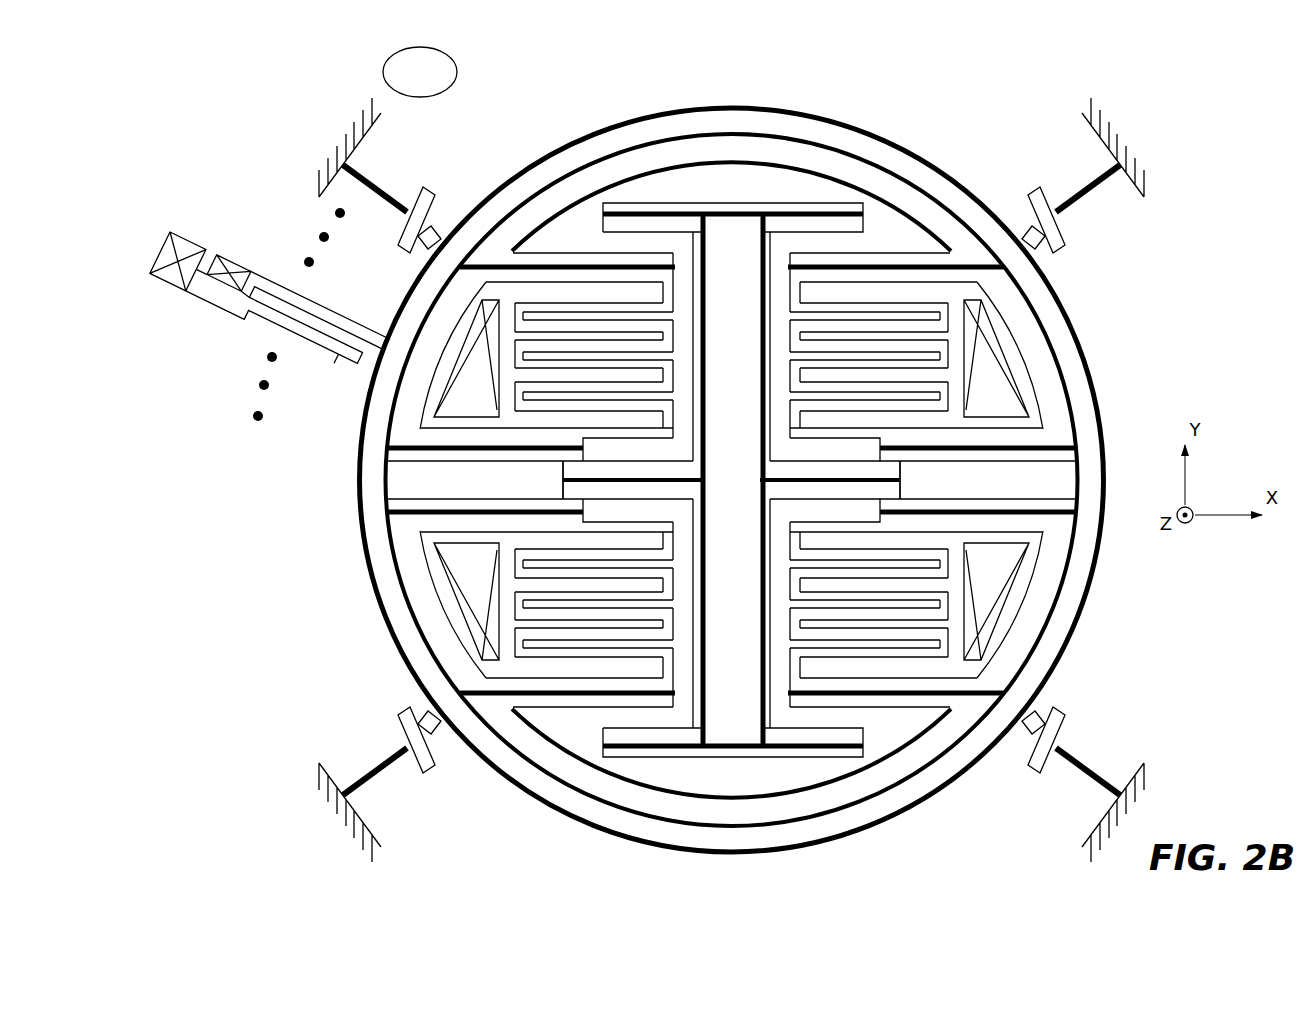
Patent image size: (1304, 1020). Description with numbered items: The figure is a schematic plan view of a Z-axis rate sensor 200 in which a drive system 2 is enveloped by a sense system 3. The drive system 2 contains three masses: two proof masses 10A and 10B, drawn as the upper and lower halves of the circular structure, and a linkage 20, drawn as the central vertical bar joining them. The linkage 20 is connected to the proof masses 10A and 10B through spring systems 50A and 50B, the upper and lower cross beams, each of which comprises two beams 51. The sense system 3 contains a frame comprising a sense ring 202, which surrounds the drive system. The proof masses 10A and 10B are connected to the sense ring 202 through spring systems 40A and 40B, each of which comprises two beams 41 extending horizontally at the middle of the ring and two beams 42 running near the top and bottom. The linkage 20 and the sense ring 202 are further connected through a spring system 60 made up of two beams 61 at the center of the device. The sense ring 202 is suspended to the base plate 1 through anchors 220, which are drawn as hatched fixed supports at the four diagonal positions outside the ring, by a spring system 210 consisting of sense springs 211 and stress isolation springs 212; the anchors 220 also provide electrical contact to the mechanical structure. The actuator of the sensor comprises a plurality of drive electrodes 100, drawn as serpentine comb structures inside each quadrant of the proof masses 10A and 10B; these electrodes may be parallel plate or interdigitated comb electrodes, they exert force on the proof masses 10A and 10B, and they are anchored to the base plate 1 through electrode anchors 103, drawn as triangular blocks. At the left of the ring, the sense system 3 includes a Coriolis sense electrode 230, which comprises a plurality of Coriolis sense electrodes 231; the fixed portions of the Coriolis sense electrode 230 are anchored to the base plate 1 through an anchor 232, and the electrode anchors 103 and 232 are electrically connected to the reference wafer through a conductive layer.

The base plate 1 is at (420, 72).
The drive system 2 is at (744, 486).
The sense system 3 is at (371, 626).
The linkage 20 is at (730, 268).
The Z-axis rate sensor 200 is at (747, 460).
The sense ring 202 is at (1063, 662).
The spring system 50A is at (787, 209).
The spring system 50B is at (781, 750).
The beam 51 is at (813, 207).
The proof mass 10A is at (989, 307).
The proof mass 10B is at (986, 656).
The spring system 40A is at (918, 273).
The spring system 40B is at (912, 688).
The beam 41 is at (1010, 455).
The beam 42 is at (962, 263).
The spring system 60 is at (797, 485).
The beam 61 is at (660, 474).
The drive electrode 100 is at (880, 373).
The electrode anchor 103 is at (996, 578).
The spring system 210 is at (388, 526).
The sense spring 211 is at (386, 774).
The stress isolation spring 212 is at (438, 772).
The anchor 220 is at (319, 800).
The Coriolis sense electrode 230 is at (261, 307).
The Coriolis sense electrode 231 is at (277, 300).
The anchor 232 is at (171, 285).